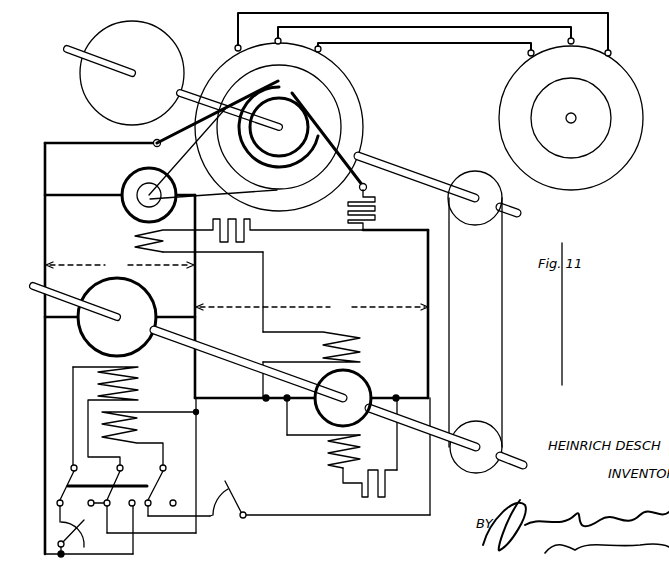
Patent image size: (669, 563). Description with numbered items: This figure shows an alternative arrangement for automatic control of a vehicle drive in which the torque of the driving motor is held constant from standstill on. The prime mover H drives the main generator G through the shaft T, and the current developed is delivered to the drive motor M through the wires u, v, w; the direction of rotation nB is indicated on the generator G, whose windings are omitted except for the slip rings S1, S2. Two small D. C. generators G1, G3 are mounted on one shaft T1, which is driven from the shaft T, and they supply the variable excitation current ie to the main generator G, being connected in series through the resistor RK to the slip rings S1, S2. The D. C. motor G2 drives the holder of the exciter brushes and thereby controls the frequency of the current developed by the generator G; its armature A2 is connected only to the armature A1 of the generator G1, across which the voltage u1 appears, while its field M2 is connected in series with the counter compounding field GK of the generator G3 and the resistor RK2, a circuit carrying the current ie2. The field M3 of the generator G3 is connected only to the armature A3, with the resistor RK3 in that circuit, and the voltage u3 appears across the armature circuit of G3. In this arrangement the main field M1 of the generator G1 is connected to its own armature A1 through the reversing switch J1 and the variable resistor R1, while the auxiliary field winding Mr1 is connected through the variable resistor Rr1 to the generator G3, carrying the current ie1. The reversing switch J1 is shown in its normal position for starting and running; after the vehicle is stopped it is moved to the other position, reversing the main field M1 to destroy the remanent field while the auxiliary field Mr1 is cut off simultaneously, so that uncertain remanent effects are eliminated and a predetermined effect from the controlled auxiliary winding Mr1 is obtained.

The prime mover H is at (165, 42).
The main generator G is at (357, 123).
The slip ring S1 is at (237, 124).
The slip ring S2 is at (308, 142).
The speed direction nB is at (350, 106).
The wire u is at (418, 32).
The wire v is at (420, 32).
The wire w is at (419, 41).
The drive motor M is at (619, 79).
The shaft T is at (378, 157).
The armature of motor G2 A2 is at (159, 183).
The D. C. motor G2 is at (132, 202).
The field of motor G2 M2 is at (154, 241).
The voltage u1 is at (120, 266).
The resistor RK2 is at (279, 228).
The resistor RK is at (375, 210).
The excitation current ie is at (346, 206).
The exciting current ie2 is at (271, 270).
The voltage u3 is at (312, 308).
The counter compounding field GK is at (322, 347).
The armature of generator G1 A1 is at (150, 296).
The D. C. generator G1 is at (80, 301).
The shaft T1 is at (38, 292).
The main field of generator G1 M1 is at (118, 417).
The auxiliary field winding Mr1 is at (149, 440).
The reversing switch J1 is at (133, 490).
The variable resistor R1 is at (78, 530).
The armature of generator G3 A3 is at (362, 386).
The D. C. generator G3 is at (328, 406).
The field of generator G3 M3 is at (332, 451).
The resistor RK3 is at (370, 475).
The variable resistor Rr1 is at (232, 494).
The exciting current ie1 is at (312, 522).